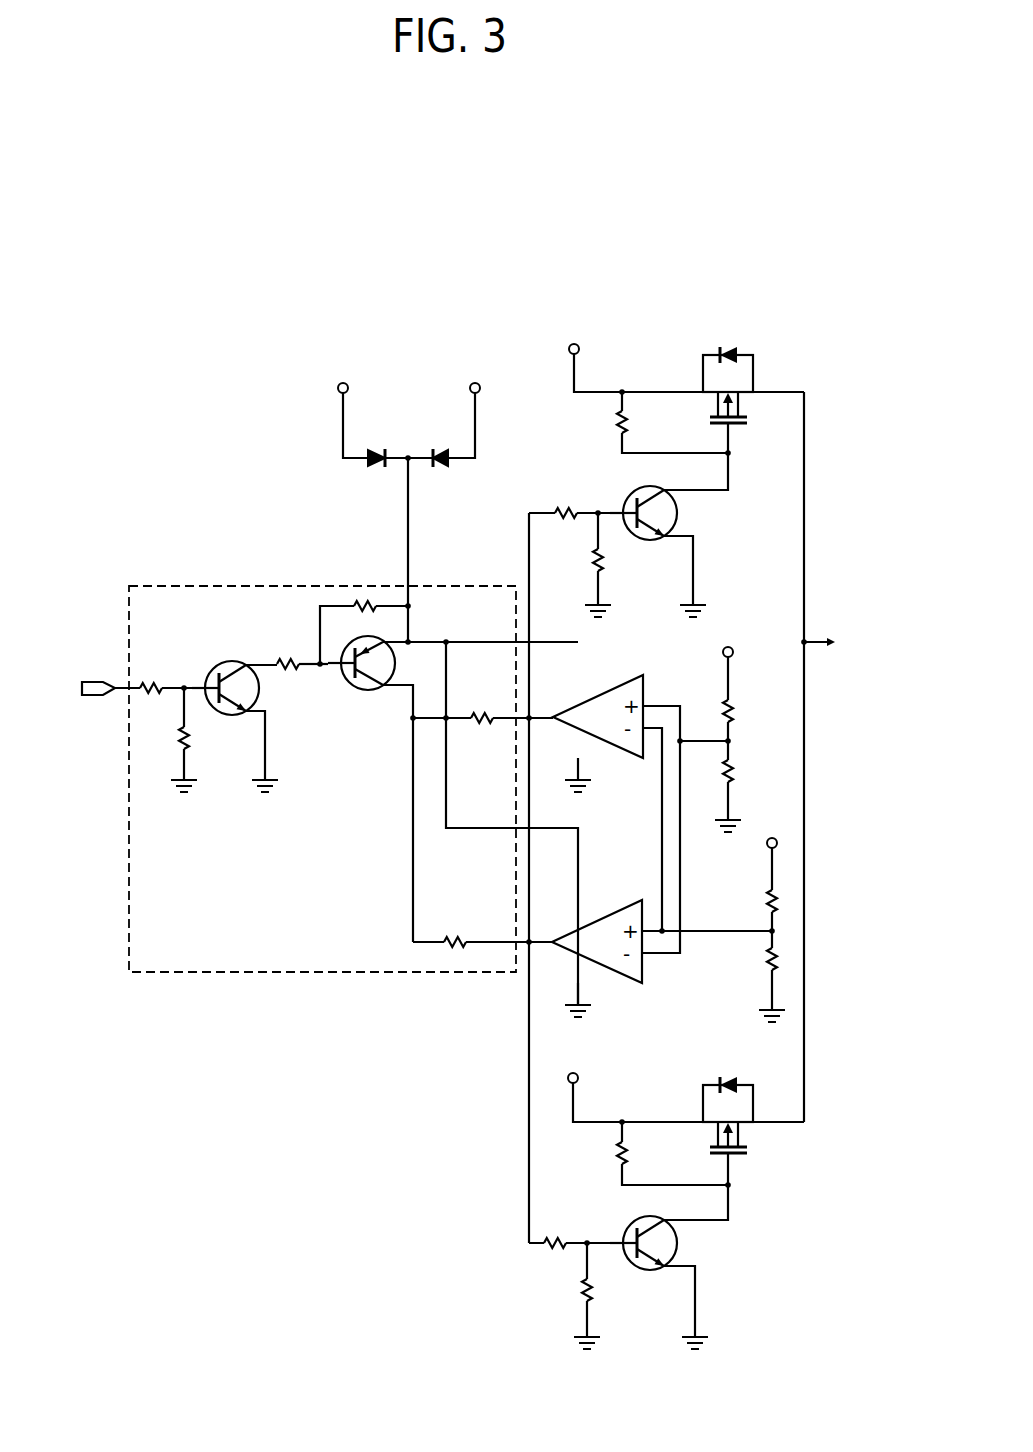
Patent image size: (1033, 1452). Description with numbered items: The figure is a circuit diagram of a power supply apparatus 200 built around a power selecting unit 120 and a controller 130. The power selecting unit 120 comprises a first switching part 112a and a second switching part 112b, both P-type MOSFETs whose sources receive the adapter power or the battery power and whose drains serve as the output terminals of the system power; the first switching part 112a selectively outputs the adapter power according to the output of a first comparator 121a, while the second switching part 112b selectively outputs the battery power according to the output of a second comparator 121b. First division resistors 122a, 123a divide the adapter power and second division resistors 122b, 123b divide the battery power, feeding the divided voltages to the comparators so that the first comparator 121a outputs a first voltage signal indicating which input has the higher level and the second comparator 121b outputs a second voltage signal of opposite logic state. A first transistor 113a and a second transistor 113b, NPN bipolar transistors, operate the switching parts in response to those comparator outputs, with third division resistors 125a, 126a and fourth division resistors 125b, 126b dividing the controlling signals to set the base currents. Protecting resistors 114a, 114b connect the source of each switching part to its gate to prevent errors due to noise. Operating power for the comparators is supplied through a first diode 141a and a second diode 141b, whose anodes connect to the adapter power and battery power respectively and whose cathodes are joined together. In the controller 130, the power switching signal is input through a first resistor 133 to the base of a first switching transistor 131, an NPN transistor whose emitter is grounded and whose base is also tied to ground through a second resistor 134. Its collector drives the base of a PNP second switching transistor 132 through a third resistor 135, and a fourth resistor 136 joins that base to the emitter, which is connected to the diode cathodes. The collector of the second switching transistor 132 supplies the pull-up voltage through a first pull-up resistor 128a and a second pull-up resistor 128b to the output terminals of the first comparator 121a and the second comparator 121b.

The power supply apparatus 200 is at (184, 245).
The power selecting unit 120 is at (808, 274).
The controller 130 is at (258, 973).
The first switching part 112a is at (728, 348).
The second switching part 112b is at (755, 1107).
The first transistor 113a is at (680, 512).
The second transistor 113b is at (680, 1243).
The protecting resistor 114a is at (620, 430).
The protecting resistor 114b is at (630, 1155).
The first comparator 121a is at (595, 690).
The second comparator 121b is at (595, 920).
The first division resistor 122a is at (735, 706).
The first division resistor 123a is at (735, 765).
The second division resistor 122b is at (779, 901).
The second division resistor 123b is at (779, 960).
The third division resistor 125a is at (562, 511).
The fourth division resistor 125b is at (545, 1250).
The third division resistor 126a is at (604, 563).
The fourth division resistor 126b is at (595, 1290).
The first pull-up resistor 128a is at (483, 726).
The second pull-up resistor 128b is at (458, 950).
The first switching transistor 131 is at (232, 660).
The second switching transistor 132 is at (368, 690).
The first resistor 133 is at (147, 697).
The second resistor 134 is at (179, 737).
The third resistor 135 is at (285, 660).
The fourth resistor 136 is at (365, 600).
The first diode 141a is at (448, 470).
The second diode 141b is at (375, 452).